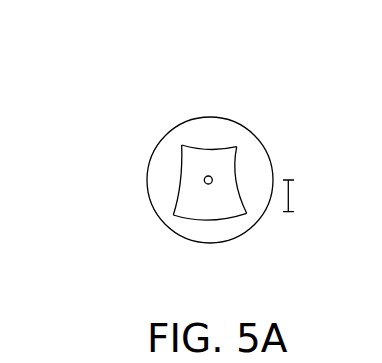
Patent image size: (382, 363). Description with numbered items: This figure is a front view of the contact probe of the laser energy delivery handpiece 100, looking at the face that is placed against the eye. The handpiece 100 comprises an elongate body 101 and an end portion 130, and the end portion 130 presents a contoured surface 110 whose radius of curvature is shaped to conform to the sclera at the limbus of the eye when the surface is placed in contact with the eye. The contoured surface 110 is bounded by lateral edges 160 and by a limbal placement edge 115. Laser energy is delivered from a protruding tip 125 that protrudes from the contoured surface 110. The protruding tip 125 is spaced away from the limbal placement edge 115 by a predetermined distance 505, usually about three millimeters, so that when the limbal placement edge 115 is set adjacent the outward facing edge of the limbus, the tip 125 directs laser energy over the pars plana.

The laser energy delivery handpiece 100 is at (100, 46).
The elongate body 101 is at (203, 118).
The contoured surface 110 is at (186, 156).
The limbal placement edge 115 is at (221, 146).
The protruding tip 125 is at (212, 180).
The end portion 130 is at (230, 218).
The lateral edges 160 is at (237, 183).
The distance 505 is at (290, 192).